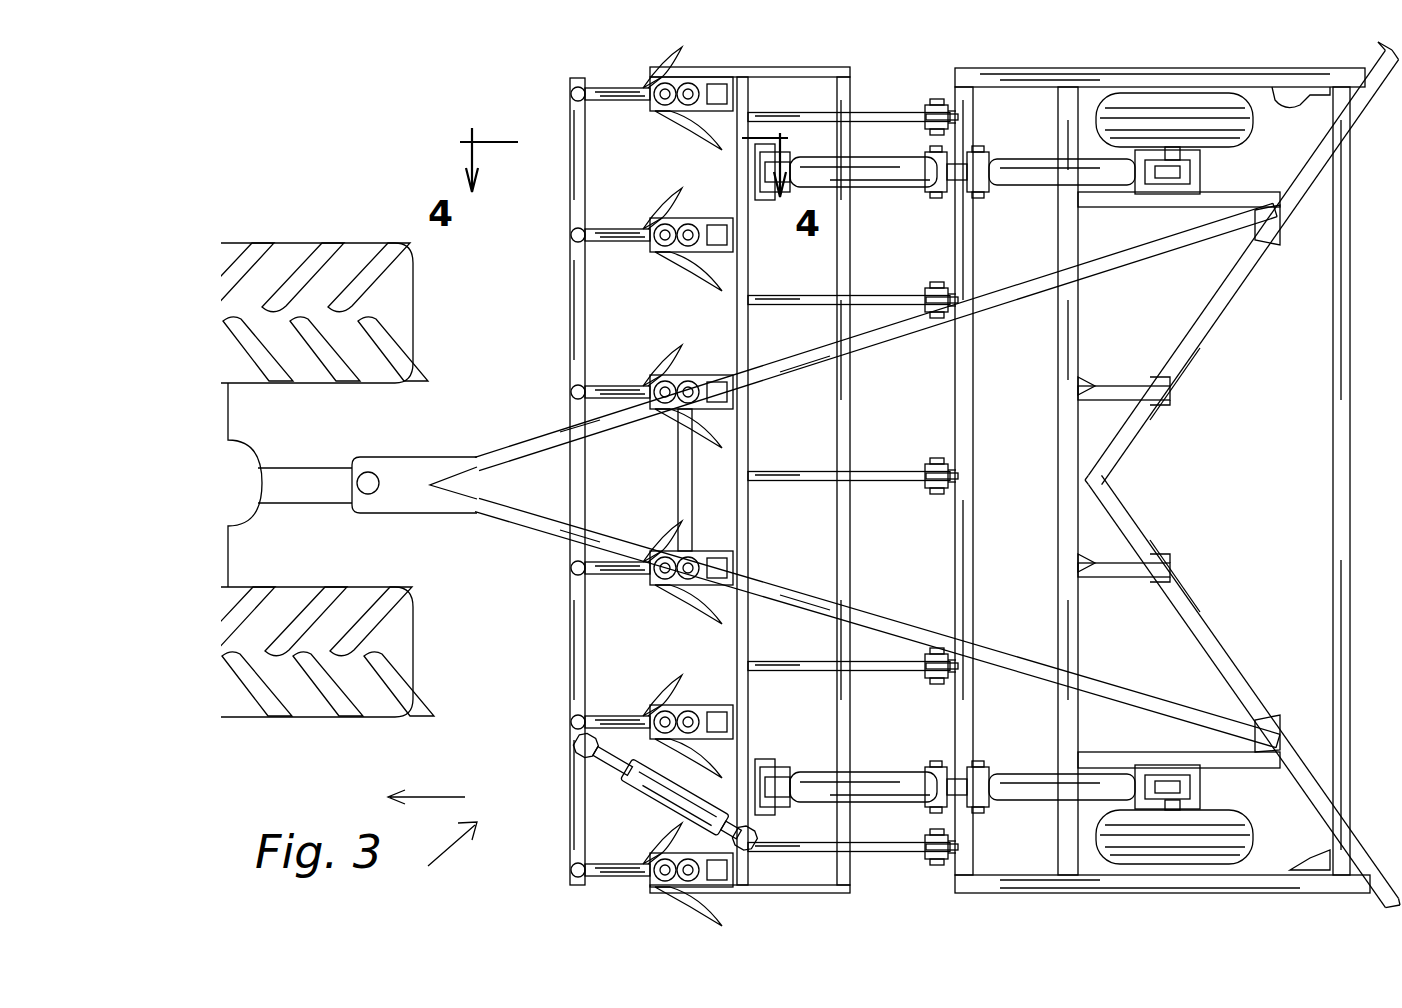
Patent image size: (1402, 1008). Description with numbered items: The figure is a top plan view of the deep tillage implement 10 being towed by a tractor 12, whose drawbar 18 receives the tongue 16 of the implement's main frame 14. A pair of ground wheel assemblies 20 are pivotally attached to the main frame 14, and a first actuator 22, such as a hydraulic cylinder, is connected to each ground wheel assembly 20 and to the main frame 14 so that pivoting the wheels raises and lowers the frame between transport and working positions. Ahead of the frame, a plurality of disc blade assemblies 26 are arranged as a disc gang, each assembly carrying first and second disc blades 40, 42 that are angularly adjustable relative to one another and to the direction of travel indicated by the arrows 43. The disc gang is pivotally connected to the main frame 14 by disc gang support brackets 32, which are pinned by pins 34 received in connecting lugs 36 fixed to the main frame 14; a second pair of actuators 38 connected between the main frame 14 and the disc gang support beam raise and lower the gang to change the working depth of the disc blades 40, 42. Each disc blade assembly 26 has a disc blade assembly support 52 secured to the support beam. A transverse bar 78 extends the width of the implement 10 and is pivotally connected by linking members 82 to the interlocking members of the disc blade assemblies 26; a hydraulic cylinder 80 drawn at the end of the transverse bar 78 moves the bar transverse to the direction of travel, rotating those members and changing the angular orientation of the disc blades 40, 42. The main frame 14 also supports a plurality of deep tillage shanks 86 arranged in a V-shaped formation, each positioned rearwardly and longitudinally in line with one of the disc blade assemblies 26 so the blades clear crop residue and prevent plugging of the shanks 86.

The deep tillage implement 10 is at (441, 853).
The tractor 12 is at (333, 717).
The main frame 14 is at (1035, 870).
The tongue 16 is at (503, 455).
The drawbar 18 is at (288, 475).
The ground wheel assemblies 20 is at (1272, 832).
The first actuator 22 is at (1040, 158).
The disc blade assemblies 26 is at (550, 99).
The disc gang support brackets 32 is at (885, 110).
The pins 34 is at (935, 98).
The connecting lugs 36 is at (925, 128).
The second pair of actuators 38 is at (895, 192).
The first disc blade 40 is at (660, 60).
The second disc blade 42 is at (690, 135).
The arrows 43 is at (430, 795).
The disc blade assembly support 52 is at (730, 75).
The transverse bar 78 is at (570, 790).
The angle adjustment cylinder 80 is at (668, 795).
The linking members 82 is at (590, 100).
The deep tillage shanks 86 is at (1272, 130).